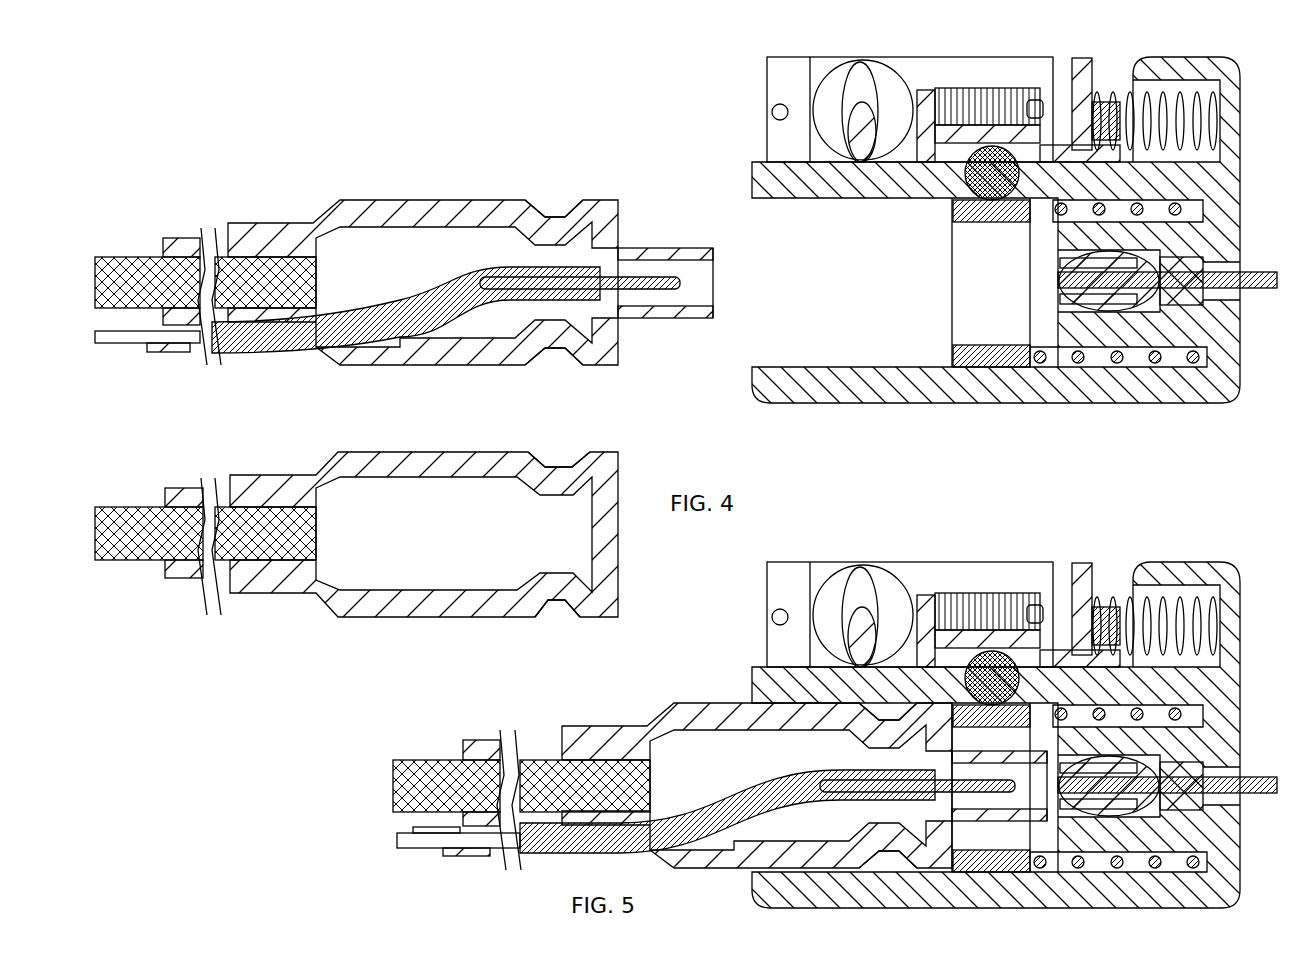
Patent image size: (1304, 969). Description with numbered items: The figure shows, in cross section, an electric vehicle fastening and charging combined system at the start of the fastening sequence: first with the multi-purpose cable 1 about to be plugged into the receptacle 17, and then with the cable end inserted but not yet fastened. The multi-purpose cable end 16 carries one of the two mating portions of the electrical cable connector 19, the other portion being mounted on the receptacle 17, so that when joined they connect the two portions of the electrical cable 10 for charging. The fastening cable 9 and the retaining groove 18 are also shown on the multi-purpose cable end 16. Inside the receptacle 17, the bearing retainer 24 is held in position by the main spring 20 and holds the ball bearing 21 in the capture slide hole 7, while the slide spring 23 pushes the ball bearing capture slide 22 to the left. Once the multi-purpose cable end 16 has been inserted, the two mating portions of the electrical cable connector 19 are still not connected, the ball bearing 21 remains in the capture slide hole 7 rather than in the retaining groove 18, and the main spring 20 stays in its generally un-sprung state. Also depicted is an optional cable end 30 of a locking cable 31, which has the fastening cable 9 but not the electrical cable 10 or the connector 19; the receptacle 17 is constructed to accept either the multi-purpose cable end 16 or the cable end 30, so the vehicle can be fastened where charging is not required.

In FIG. 4, the multi-purpose cable 1 is at (105, 137).
In FIG. 5, the multi-purpose cable 1 is at (375, 740).
In FIG. 4, the capture slide hole 7 is at (970, 150).
In FIG. 5, the capture slide hole 7 is at (955, 665).
In FIG. 4, the fastening cable 9 is at (130, 278).
In FIG. 5, the fastening cable 9 is at (390, 760).
In FIG. 4, the electrical cable 10 is at (112, 333).
In FIG. 5, the electrical cable 10 is at (395, 826).
In FIG. 4, the multi-purpose cable end 16 is at (690, 170).
In FIG. 5, the multi-purpose cable end 16 is at (743, 692).
In FIG. 4, the receptacle 17 is at (713, 323).
In FIG. 5, the receptacle 17 is at (782, 921).
In FIG. 4, the retaining groove 18 is at (552, 200).
In FIG. 5, the retaining groove 18 is at (890, 713).
In FIG. 4, the electrical cable connector 19 is at (715, 340).
In FIG. 5, the electrical cable connector 19 is at (1042, 795).
In FIG. 4, the main spring 20 is at (1060, 207).
In FIG. 5, the main spring 20 is at (1078, 863).
In FIG. 4, the ball bearing 21 is at (996, 165).
In FIG. 5, the ball bearing 21 is at (994, 670).
In FIG. 4, the ball bearing capture slide 22 is at (1005, 130).
In FIG. 5, the ball bearing capture slide 22 is at (1003, 660).
In FIG. 4, the slide spring 23 is at (1112, 100).
In FIG. 5, the slide spring 23 is at (1117, 605).
In FIG. 4, the bearing retainer 24 is at (990, 222).
In FIG. 5, the bearing retainer 24 is at (991, 788).
In FIG. 4, the cable end 30 is at (215, 453).
In FIG. 4, the locking cable 31 is at (98, 432).